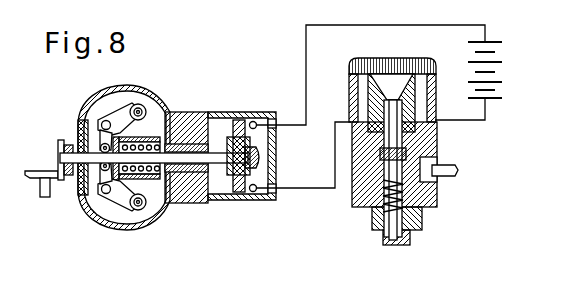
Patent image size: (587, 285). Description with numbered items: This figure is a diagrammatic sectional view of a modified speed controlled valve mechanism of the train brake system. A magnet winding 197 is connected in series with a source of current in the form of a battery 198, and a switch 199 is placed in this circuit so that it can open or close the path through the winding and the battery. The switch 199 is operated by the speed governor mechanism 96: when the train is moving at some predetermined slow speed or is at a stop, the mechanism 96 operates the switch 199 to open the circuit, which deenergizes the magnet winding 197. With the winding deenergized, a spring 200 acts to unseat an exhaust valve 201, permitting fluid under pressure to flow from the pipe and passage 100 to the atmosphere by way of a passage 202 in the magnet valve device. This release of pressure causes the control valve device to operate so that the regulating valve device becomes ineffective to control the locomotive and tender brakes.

The speed governor mechanism 96 is at (128, 115).
The magnet winding 197 is at (356, 66).
The battery 198 is at (497, 60).
The switch 199 is at (241, 200).
The spring 200 is at (378, 213).
The exhaust valve 201 is at (424, 127).
The pipe and passage 100 is at (450, 169).
The passage 202 is at (400, 191).